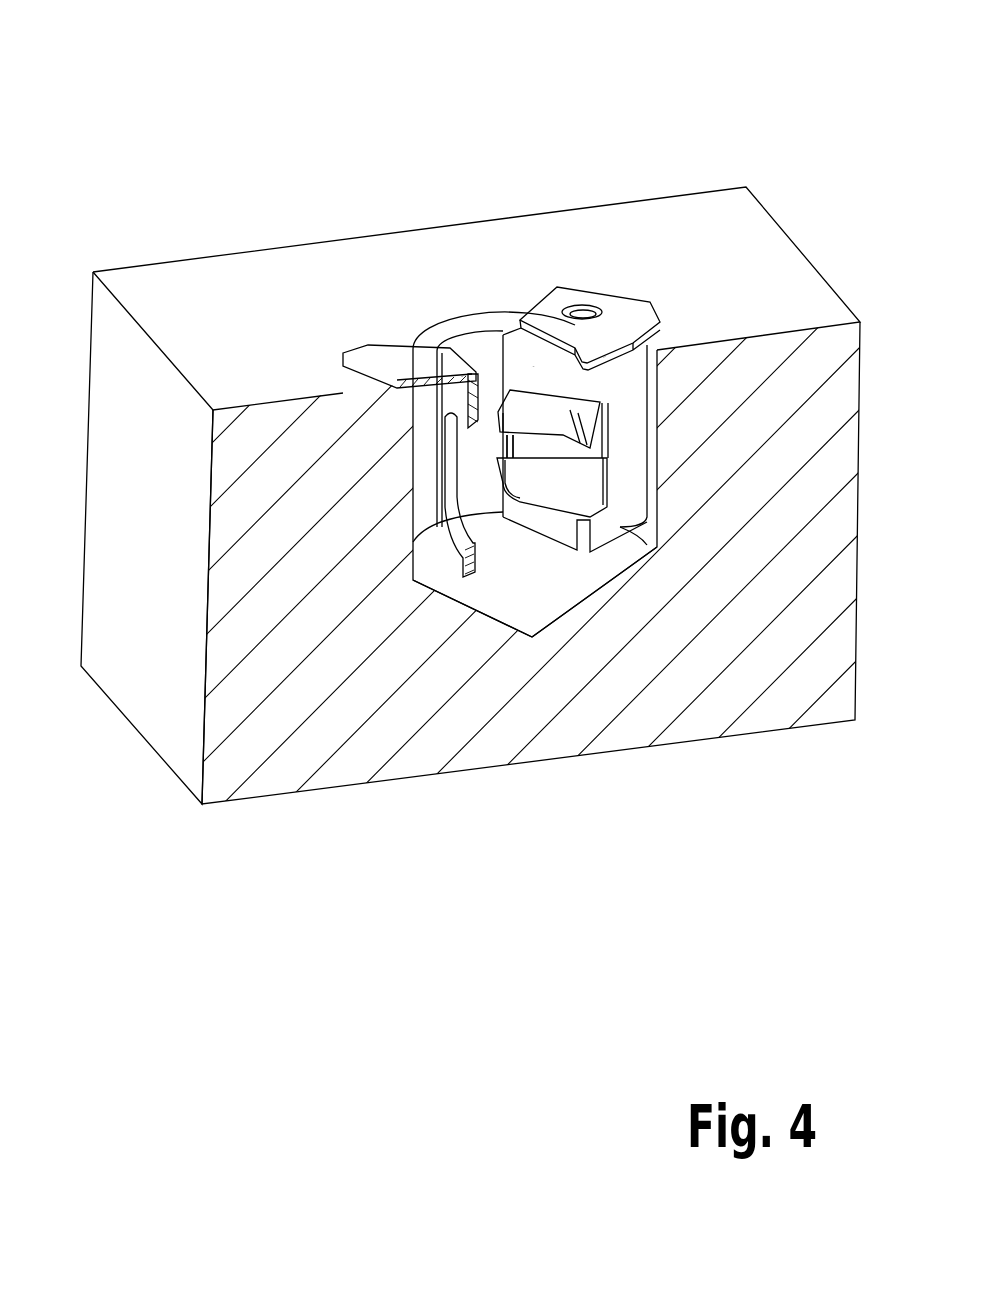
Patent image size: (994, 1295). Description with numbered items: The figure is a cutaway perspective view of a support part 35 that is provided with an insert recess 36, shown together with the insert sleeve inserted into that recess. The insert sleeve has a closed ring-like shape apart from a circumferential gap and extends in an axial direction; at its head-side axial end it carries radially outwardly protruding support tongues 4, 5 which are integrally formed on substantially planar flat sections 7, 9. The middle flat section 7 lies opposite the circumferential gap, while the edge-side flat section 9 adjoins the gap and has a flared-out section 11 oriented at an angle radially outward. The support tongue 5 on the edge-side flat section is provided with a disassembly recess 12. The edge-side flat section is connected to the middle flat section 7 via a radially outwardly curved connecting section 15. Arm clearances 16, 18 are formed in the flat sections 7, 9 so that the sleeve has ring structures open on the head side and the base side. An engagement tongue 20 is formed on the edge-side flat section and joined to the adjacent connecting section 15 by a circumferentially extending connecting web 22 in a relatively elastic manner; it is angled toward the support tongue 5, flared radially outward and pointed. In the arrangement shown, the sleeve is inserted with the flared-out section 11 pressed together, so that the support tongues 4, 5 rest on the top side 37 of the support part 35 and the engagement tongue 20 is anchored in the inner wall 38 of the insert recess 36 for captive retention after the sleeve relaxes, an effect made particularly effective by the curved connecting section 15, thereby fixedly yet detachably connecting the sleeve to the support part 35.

The support tongue 4 is at (368, 363).
The support tongue 5 is at (547, 297).
The flat section 7 is at (452, 545).
The flat section 9 is at (541, 527).
The flared-out section 11 is at (632, 395).
The disassembly recess 12 is at (586, 305).
The connecting section 15 is at (480, 357).
The arm clearance 16 is at (468, 452).
The arm clearance 18 is at (583, 495).
The engagement tongue 20 is at (590, 422).
The connecting web 22 is at (557, 448).
The support part 35 is at (243, 708).
The insert recess 36 is at (518, 596).
The top side 37 is at (708, 264).
The inner wall 38 is at (652, 515).